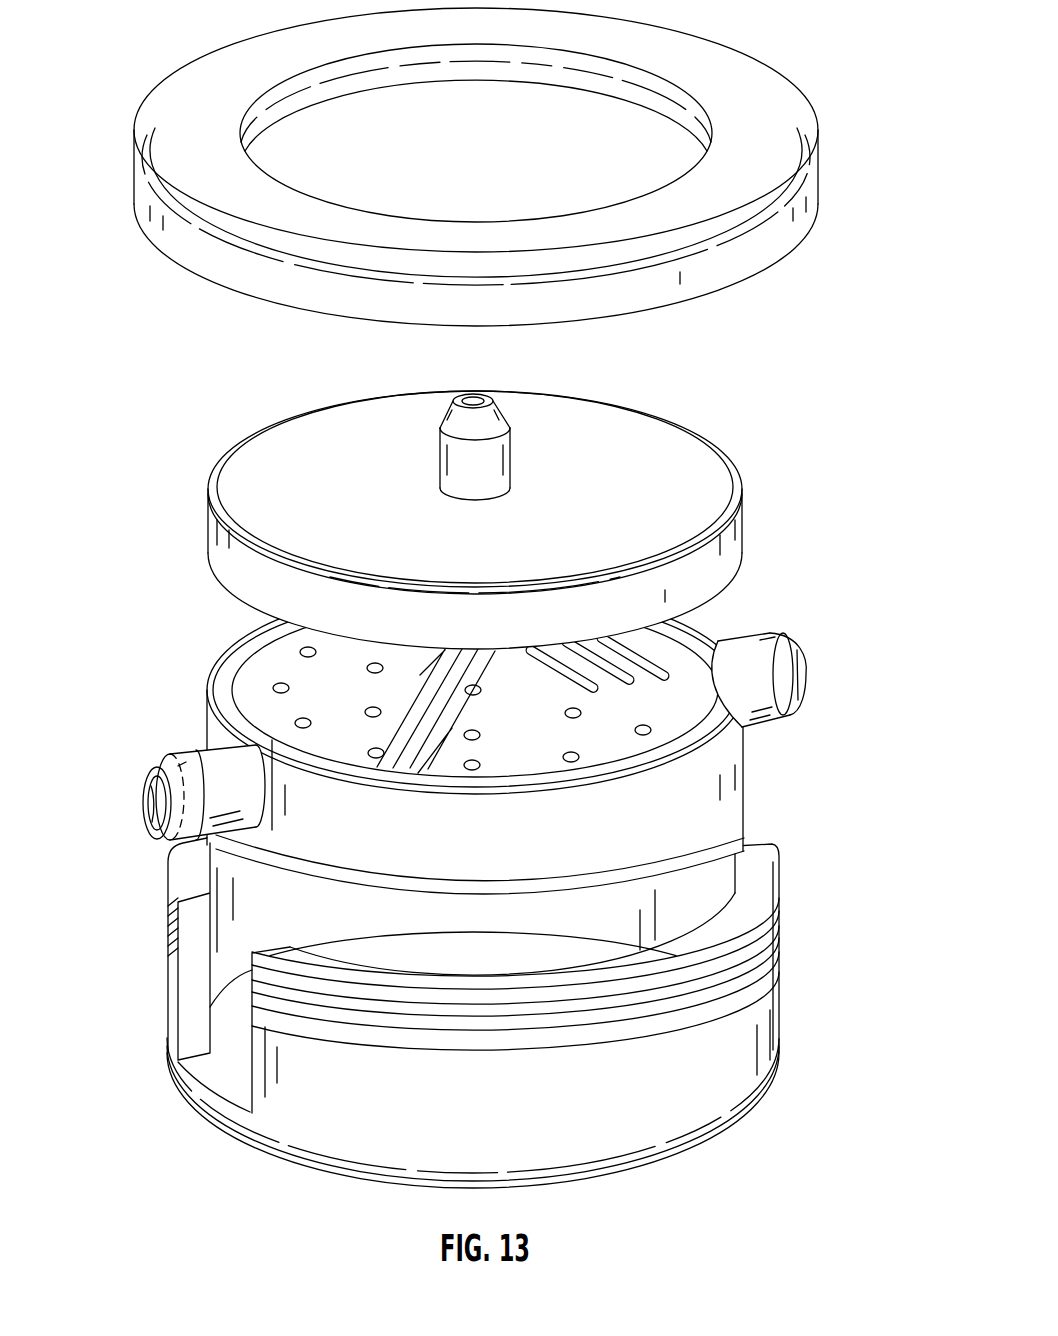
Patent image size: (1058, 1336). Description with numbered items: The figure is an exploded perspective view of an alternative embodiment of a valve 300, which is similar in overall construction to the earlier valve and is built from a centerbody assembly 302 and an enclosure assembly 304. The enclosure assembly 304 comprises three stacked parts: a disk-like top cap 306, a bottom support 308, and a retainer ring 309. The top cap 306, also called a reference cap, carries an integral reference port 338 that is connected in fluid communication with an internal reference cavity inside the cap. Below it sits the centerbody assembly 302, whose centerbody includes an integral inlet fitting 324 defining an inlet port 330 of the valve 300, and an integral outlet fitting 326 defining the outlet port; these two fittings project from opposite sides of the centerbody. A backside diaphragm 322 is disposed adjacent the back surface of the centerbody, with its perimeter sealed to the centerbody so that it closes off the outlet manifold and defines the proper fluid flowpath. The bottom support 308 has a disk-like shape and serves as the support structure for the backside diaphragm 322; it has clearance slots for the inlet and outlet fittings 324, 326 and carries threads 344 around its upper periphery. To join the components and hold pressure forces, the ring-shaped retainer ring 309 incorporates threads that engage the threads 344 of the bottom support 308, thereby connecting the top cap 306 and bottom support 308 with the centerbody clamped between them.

The valve 300 is at (102, 101).
The centerbody assembly 302 is at (796, 592).
The enclosure assembly 304 is at (520, 1026).
The top cap 306 is at (673, 457).
The bottom support 308 is at (762, 996).
The retainer ring 309 is at (762, 109).
The backside diaphragm 322 is at (147, 823).
The inlet fitting 324 is at (783, 670).
The outlet fitting 326 is at (192, 762).
The inlet port 330 is at (800, 645).
The reference port 338 is at (487, 427).
The threads 344 is at (783, 923).